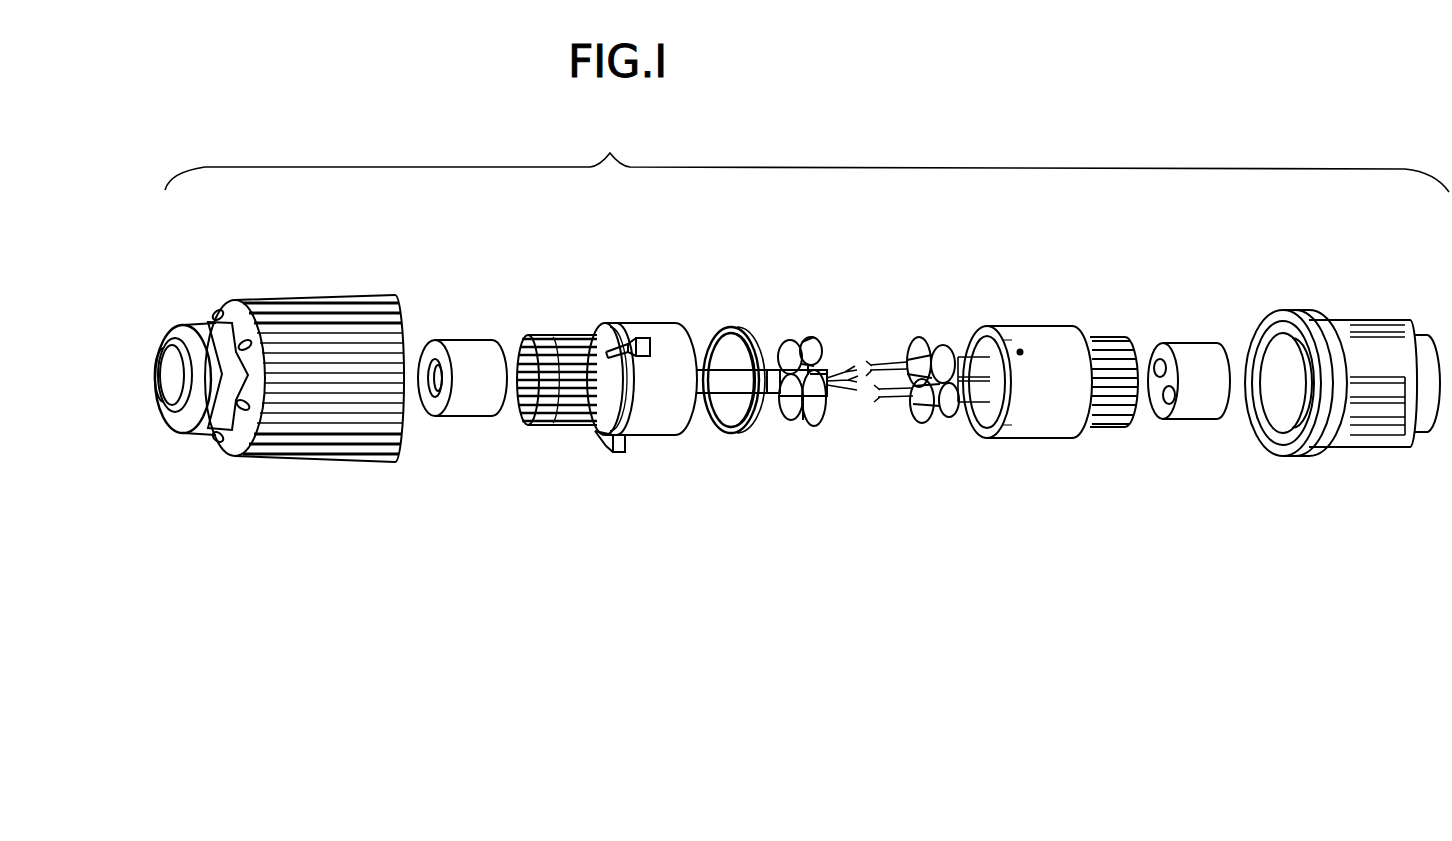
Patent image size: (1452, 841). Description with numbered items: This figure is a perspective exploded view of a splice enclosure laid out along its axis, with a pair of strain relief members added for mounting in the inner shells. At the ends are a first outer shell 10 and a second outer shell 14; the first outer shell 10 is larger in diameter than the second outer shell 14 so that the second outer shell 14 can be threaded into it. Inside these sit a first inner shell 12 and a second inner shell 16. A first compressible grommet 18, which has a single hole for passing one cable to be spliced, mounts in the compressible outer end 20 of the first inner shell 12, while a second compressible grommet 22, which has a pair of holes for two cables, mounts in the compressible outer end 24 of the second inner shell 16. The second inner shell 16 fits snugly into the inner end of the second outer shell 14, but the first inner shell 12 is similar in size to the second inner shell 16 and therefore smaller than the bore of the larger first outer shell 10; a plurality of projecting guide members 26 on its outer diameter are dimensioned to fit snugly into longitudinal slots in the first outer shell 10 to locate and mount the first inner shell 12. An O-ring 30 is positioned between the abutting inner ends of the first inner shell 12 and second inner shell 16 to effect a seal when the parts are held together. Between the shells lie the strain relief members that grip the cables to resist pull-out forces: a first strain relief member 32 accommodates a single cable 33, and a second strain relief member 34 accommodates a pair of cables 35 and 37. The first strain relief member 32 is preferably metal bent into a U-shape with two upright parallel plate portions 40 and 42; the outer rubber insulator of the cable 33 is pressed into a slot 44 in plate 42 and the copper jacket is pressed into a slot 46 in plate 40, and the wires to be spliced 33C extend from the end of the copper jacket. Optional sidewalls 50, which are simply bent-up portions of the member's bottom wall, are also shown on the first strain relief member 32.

The first outer shell 10 is at (298, 296).
The first inner shell 12 is at (654, 322).
The second outer shell 14 is at (1351, 320).
The second inner shell 16 is at (1055, 350).
The first compressible grommet 18 is at (467, 343).
The compressible outer end of first inner shell 20 is at (561, 335).
The second compressible grommet 22 is at (1187, 345).
The compressible outer end of second inner shell 24 is at (1110, 340).
The projecting guide members 26 is at (640, 343).
The O-ring 30 is at (737, 327).
The first strain relief member 32 is at (823, 395).
The cable 33 is at (722, 378).
The wires to be spliced 33C is at (848, 393).
The second strain relief member 34 is at (928, 334).
The cable 35 is at (981, 360).
The cable 37 is at (978, 396).
The second parallel plate portion 40 is at (822, 345).
The first parallel plate portion 42 is at (781, 343).
The slot in plate 42 44 is at (790, 388).
The slot in plate 40 46 is at (822, 378).
The sidewalls 50 is at (798, 423).